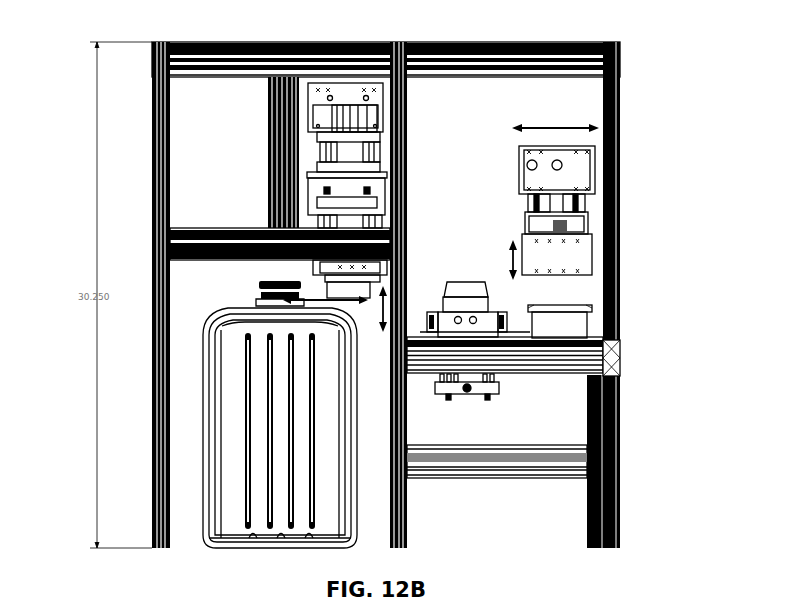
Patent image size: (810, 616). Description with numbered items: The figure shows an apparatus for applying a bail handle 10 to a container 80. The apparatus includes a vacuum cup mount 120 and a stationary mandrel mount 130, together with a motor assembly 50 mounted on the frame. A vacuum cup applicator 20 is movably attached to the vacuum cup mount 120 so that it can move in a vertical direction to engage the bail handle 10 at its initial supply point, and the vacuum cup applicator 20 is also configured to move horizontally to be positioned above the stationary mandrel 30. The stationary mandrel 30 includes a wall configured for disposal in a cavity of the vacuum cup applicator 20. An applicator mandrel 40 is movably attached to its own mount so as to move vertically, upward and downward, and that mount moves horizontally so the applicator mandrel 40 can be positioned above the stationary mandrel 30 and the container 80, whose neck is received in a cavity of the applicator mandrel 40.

The bail handle 10 is at (555, 300).
The vacuum cup applicator 20 is at (571, 258).
The stationary mandrel 30 is at (475, 290).
The applicator mandrel 40 is at (338, 296).
The motor assembly 50 is at (338, 109).
The container 80 is at (255, 453).
The vacuum cup mount 120 is at (570, 168).
The stationary mandrel mount 130 is at (495, 386).